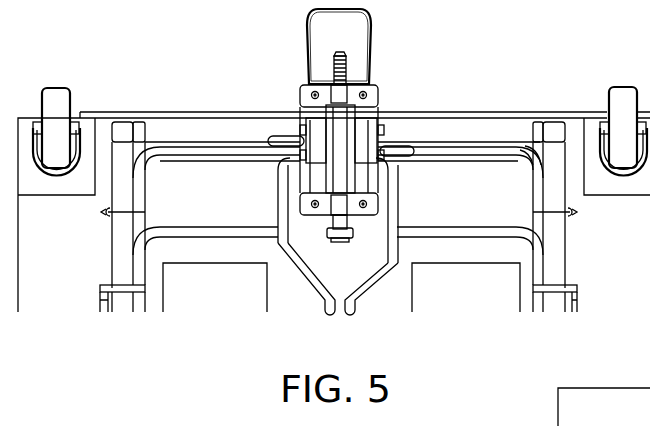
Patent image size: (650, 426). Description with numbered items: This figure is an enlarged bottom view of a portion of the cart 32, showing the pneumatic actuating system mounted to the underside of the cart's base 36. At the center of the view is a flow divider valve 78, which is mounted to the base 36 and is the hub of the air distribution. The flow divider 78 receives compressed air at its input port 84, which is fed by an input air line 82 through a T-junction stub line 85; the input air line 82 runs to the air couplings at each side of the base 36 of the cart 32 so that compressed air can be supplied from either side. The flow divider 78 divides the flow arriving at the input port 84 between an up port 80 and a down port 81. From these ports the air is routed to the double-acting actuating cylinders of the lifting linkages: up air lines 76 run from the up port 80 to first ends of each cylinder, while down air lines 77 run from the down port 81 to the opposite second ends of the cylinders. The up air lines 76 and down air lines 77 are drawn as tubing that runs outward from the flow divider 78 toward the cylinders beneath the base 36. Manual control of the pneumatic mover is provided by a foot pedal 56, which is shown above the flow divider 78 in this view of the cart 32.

The cart 32 is at (148, 41).
The base 36 is at (584, 406).
The foot pedal 56 is at (322, 36).
The up air lines 76 is at (278, 222).
The down air lines 77 is at (158, 142).
The flow divider valve 78 is at (353, 128).
The up port 80 is at (300, 166).
The down port 81 is at (303, 128).
The input air line 82 is at (525, 153).
The input port 84 is at (387, 142).
The T-junction stub line 85 is at (402, 155).